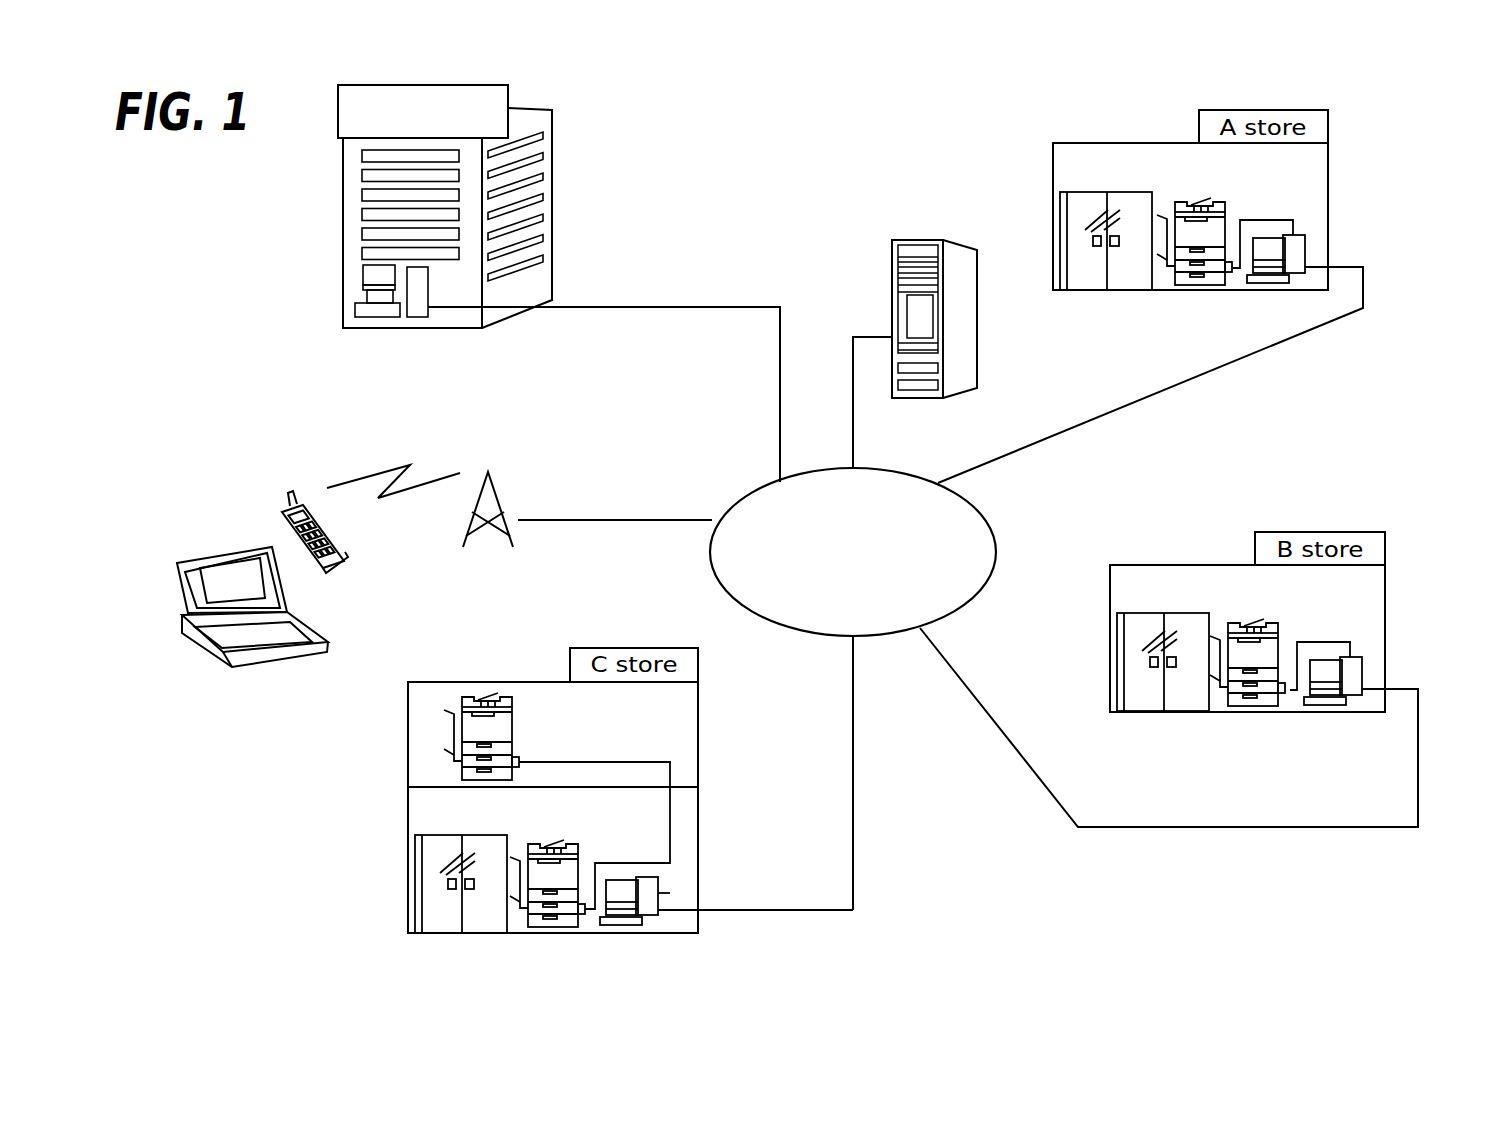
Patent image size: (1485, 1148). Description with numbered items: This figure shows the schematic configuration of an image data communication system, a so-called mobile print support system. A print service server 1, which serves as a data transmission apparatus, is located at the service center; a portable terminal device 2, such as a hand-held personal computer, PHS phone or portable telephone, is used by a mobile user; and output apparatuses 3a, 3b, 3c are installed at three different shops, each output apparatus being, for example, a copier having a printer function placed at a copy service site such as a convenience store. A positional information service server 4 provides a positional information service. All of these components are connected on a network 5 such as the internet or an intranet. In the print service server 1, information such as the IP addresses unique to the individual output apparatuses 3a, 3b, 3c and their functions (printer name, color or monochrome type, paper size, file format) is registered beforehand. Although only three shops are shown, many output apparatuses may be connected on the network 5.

The print service server 1 is at (552, 259).
The portable terminal device 2 is at (334, 593).
The output apparatus 3a is at (1225, 205).
The output apparatus 3b is at (1282, 627).
The output apparatus 3c is at (522, 912).
The positional information service server 4 is at (965, 348).
The network 5 is at (967, 508).